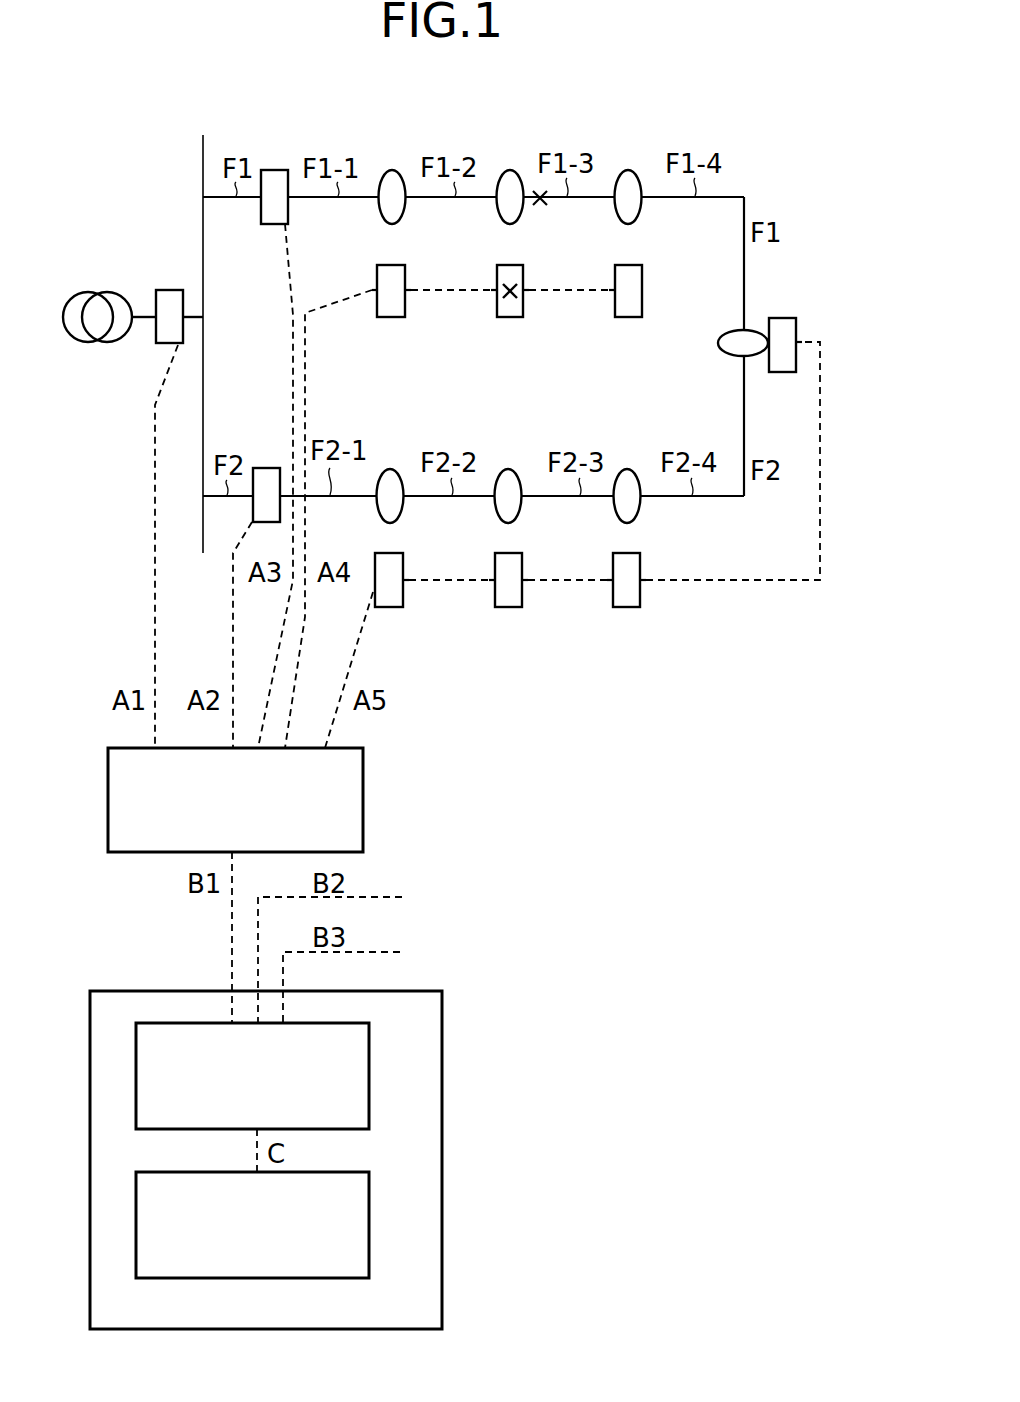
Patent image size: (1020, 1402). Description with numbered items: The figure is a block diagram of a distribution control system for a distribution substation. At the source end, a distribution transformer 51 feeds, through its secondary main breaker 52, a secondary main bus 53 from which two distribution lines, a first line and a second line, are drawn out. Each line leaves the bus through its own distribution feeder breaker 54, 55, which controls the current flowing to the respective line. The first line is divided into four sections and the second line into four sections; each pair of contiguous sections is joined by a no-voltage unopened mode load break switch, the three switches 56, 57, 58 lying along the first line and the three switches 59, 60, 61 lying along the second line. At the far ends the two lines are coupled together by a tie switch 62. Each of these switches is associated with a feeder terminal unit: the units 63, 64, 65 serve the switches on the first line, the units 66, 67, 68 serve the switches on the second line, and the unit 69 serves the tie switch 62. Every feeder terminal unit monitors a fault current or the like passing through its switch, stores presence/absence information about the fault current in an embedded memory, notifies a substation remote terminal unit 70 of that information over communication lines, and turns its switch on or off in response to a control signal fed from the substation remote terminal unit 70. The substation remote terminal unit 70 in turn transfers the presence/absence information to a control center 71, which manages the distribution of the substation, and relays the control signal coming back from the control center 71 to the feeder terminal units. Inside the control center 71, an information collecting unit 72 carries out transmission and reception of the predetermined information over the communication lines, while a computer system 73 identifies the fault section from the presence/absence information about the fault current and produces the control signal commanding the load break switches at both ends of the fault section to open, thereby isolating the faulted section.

The distribution transformer 51 is at (95, 287).
The secondary main breaker 52 is at (172, 287).
The secondary main bus 53 is at (205, 378).
The distribution feeder breaker 54 is at (273, 167).
The distribution feeder breaker 55 is at (265, 466).
The no-voltage unopened mode load break switch 56 is at (393, 169).
The no-voltage unopened mode load break switch 57 is at (511, 169).
The no-voltage unopened mode load break switch 58 is at (629, 169).
The no-voltage unopened mode load break switch 59 is at (392, 467).
The no-voltage unopened mode load break switch 60 is at (507, 467).
The no-voltage unopened mode load break switch 61 is at (627, 466).
The tie switch 62 is at (731, 331).
The feeder terminal unit 63 is at (392, 320).
The feeder terminal unit 64 is at (510, 320).
The feeder terminal unit 65 is at (630, 320).
The feeder terminal unit 66 is at (390, 610).
The feeder terminal unit 67 is at (508, 610).
The feeder terminal unit 68 is at (627, 610).
The feeder terminal unit 69 is at (785, 317).
The substation remote terminal unit 70 is at (365, 800).
The control center 71 is at (497, 1054).
The information collecting unit 72 is at (372, 1077).
The computer system 73 is at (372, 1227).